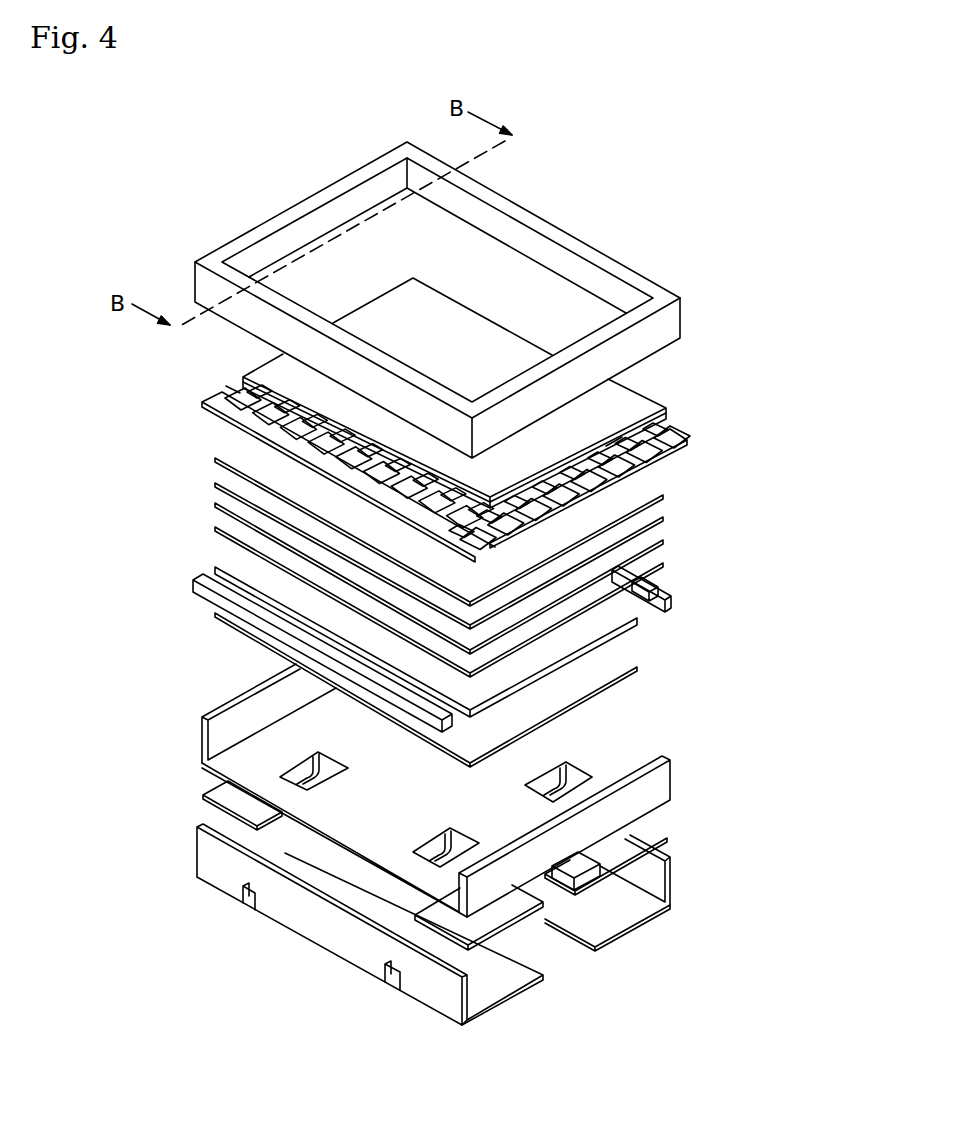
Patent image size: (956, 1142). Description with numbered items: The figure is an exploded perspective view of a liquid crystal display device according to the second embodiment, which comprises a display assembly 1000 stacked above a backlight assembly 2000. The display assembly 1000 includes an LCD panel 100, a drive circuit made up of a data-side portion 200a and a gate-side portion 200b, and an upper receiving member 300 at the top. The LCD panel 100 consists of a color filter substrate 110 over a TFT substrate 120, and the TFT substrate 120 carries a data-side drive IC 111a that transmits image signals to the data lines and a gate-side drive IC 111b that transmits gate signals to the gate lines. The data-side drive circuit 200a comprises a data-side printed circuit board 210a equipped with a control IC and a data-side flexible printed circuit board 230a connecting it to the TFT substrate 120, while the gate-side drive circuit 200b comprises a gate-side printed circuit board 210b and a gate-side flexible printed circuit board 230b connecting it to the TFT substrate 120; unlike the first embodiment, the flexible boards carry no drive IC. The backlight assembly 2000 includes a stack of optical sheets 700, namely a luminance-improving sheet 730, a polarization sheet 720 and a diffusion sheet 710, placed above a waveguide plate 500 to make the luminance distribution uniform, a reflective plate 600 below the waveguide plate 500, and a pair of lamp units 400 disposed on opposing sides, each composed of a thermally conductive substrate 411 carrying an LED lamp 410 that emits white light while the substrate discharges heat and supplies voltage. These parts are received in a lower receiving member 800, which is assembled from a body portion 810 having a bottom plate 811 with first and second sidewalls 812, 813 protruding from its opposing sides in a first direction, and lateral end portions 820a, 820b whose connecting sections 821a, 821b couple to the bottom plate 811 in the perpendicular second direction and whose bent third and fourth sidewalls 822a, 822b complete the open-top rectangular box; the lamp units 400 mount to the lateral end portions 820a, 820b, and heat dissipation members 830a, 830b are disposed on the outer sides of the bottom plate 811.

The display assembly 1000 is at (480, 352).
The backlight assembly 2000 is at (498, 741).
The upper receiving member 300 is at (670, 321).
The LCD panel 100 is at (479, 425).
The color filter substrate 110 is at (660, 408).
The TFT substrate 120 is at (668, 418).
The data-side drive IC 111a is at (613, 440).
The gate-side drive IC 111b is at (224, 390).
The data-side drive circuit 200a is at (641, 486).
The data-side printed circuit board 210a is at (686, 442).
The data-side flexible printed circuit board 230a is at (688, 434).
The gate-side drive circuit 200b is at (278, 465).
The gate-side printed circuit board 210b is at (203, 403).
The gate-side flexible printed circuit board 230b is at (226, 396).
The optical sheets 700 is at (516, 567).
The luminance-improving sheet 730 is at (663, 497).
The polarization sheet 720 is at (663, 519).
The diffusion sheet 710 is at (663, 541).
The lamp unit 400 is at (467, 649).
The LED lamp 410 is at (670, 604).
The thermally conductive substrate 411 is at (658, 590).
The waveguide plate 500 is at (623, 627).
The reflective plate 600 is at (637, 665).
The body portion 810 is at (446, 780).
The bottom plate 811 is at (247, 767).
The first sidewall 812 is at (252, 693).
The second sidewall 813 is at (648, 772).
The lower receiving member 800 is at (462, 903).
The lateral end portion 820a is at (656, 893).
The connecting section 821a is at (632, 912).
The third sidewall 822a is at (657, 882).
The lateral end portion 820b is at (423, 903).
The connecting section 821b is at (203, 827).
The fourth sidewall 822b is at (200, 845).
The heat dissipation member 830a is at (667, 838).
The heat dissipation member 830b is at (510, 915).